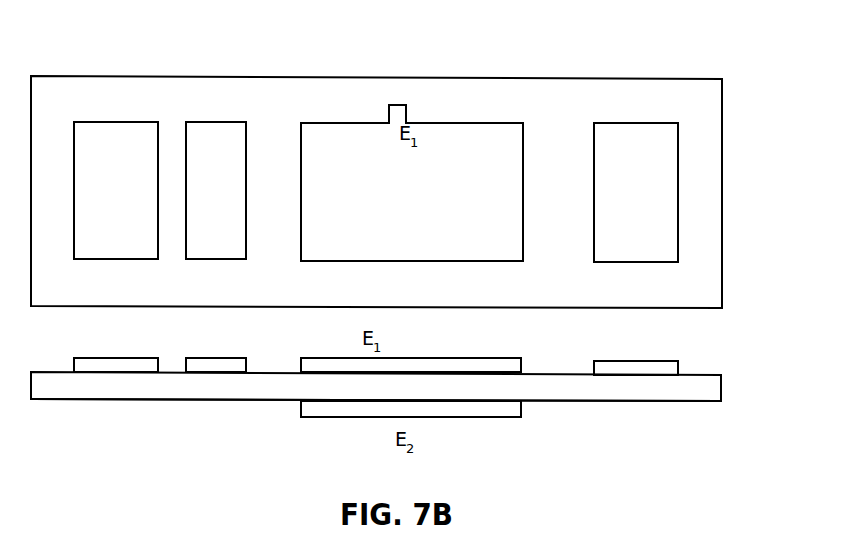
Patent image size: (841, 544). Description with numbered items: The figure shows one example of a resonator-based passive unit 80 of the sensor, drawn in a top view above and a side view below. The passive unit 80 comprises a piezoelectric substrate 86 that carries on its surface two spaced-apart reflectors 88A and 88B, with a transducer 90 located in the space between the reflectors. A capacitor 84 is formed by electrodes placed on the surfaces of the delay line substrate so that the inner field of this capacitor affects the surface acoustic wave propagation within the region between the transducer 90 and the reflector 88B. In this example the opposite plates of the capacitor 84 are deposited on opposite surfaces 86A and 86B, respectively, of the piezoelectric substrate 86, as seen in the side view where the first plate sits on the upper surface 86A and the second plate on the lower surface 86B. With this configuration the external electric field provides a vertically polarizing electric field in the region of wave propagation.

The passive unit 80 is at (172, 44).
The capacitor 84 is at (413, 205).
The piezoelectric substrate 86 is at (645, 63).
The first surface of the piezoelectric substrate 86A is at (569, 88).
The second surface of the piezoelectric substrate 86B is at (691, 402).
The reflector 88A is at (127, 205).
The reflector 88B is at (650, 205).
The transducer 90 is at (231, 205).